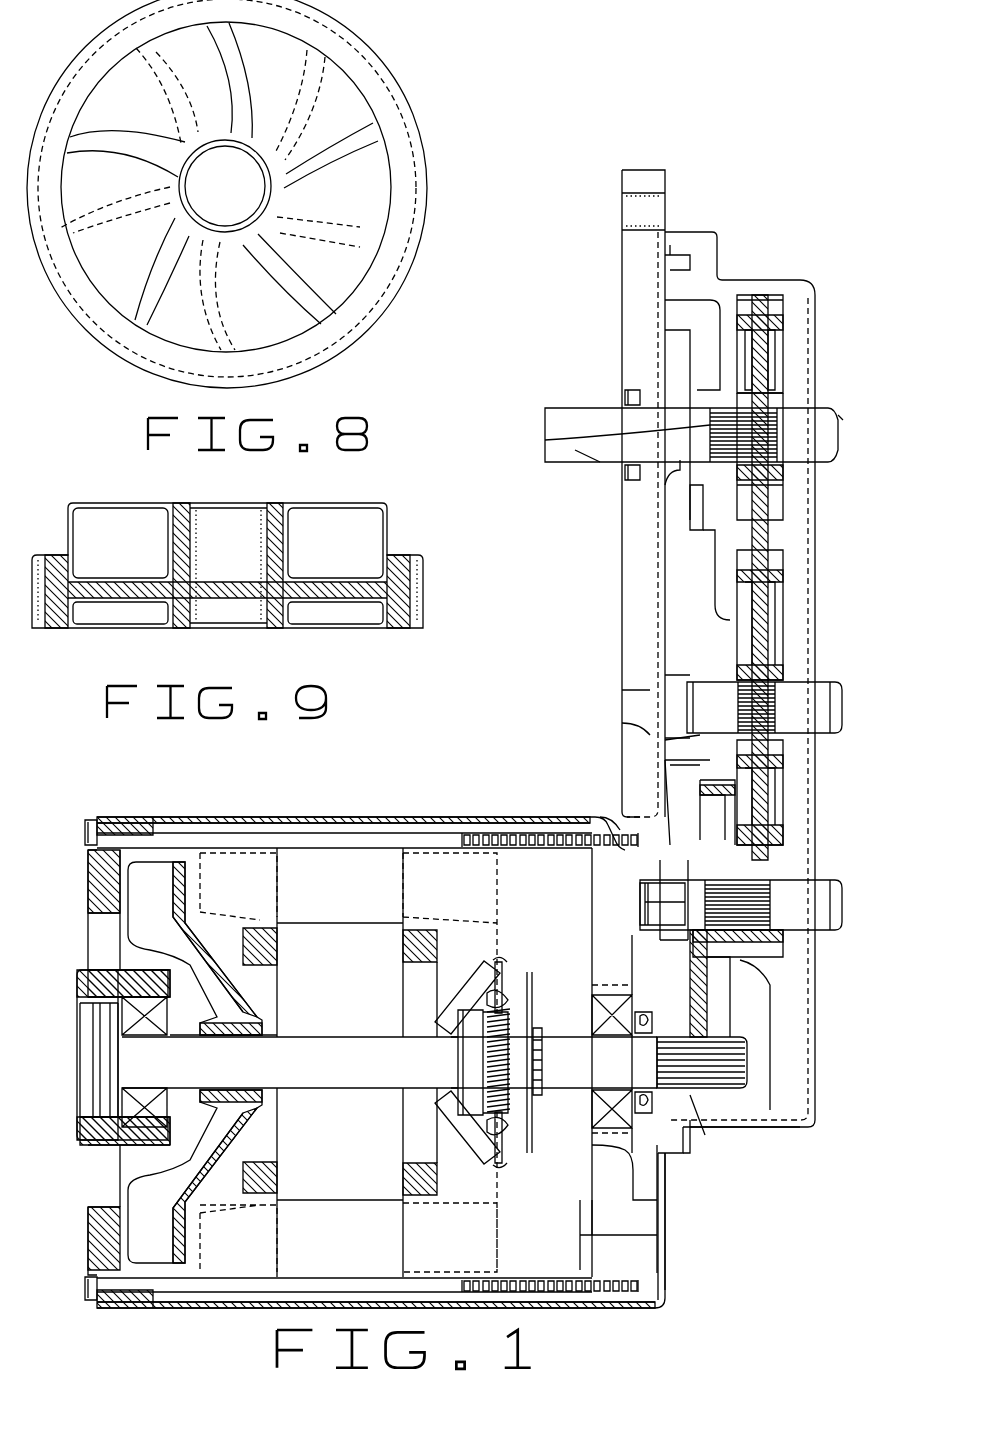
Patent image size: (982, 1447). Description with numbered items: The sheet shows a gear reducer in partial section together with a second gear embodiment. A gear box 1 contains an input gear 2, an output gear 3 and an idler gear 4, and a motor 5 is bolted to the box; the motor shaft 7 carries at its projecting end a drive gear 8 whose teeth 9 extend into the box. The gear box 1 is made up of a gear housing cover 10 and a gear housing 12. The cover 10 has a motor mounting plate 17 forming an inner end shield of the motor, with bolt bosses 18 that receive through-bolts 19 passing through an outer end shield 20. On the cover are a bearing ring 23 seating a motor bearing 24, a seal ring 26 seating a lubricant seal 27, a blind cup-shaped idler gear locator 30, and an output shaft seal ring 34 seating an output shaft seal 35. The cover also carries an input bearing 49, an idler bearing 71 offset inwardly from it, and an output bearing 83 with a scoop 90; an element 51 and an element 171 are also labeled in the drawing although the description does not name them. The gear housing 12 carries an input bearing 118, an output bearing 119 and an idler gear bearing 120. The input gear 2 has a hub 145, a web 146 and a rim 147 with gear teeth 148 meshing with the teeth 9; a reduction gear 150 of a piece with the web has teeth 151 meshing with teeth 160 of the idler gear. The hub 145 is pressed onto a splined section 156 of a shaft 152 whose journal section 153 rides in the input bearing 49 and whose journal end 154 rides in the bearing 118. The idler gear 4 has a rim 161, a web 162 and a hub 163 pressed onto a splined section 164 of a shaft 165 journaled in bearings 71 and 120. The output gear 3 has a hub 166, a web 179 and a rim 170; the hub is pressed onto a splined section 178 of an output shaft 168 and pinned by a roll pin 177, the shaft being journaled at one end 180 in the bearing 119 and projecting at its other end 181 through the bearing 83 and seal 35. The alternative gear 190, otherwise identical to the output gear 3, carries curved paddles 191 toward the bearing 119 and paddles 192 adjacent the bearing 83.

In FIG. 1, the gear box 1 is at (555, 643).
In FIG. 1, the input gear 2 is at (720, 1003).
In FIG. 1, the output gear 3 is at (783, 518).
In FIG. 1, the idler gear 4 is at (770, 648).
In FIG. 1, the motor 5 is at (444, 818).
In FIG. 1, the shaft 7 is at (755, 1062).
In FIG. 1, the drive gear 8 is at (700, 1085).
In FIG. 1, the teeth 9 is at (745, 1075).
In FIG. 1, the gear housing cover 10 is at (620, 527).
In FIG. 1, the gear housing 12 is at (822, 565).
In FIG. 1, the motor mounting plate 17 is at (665, 1230).
In FIG. 1, the bolt bosses 18 is at (612, 825).
In FIG. 1, the through-bolts 19 is at (360, 833).
In FIG. 1, the outer end shield 20 is at (80, 1245).
In FIG. 1, the bearing ring 23 is at (600, 1160).
In FIG. 1, the motor bearing 24 is at (592, 1110).
In FIG. 1, the seal ring 26 is at (645, 1013).
In FIG. 1, the lubricant seal 27 is at (690, 1102).
In FIG. 1, the idler gear locator 30 is at (625, 690).
In FIG. 1, the output shaft seal ring 34 is at (625, 398).
In FIG. 1, the output shaft seal 35 is at (625, 475).
In FIG. 1, the input bearing 49 is at (660, 935).
In FIG. 1, the snap ring 51 is at (640, 910).
In FIG. 1, the idler bearing 71 is at (700, 672).
In FIG. 1, the output bearing 83 is at (670, 500).
In FIG. 8, the scoop 90 is at (92, 338).
In FIG. 1, the input bearing 118 is at (810, 885).
In FIG. 1, the output bearing 119 is at (820, 385).
In FIG. 1, the idler gear bearing 120 is at (825, 680).
In FIG. 1, the hub 145 is at (775, 955).
In FIG. 1, the web 146 is at (700, 815).
In FIG. 1, the rim 147 is at (705, 790).
In FIG. 1, the gear teeth 148 is at (700, 740).
In FIG. 1, the reduction gear 150 is at (765, 975).
In FIG. 1, the gear teeth 151 is at (770, 1000).
In FIG. 1, the shaft 152 is at (790, 908).
In FIG. 1, the journal section 153 is at (668, 893).
In FIG. 1, the journal end 154 is at (818, 915).
In FIG. 1, the splined section 156 is at (780, 895).
In FIG. 1, the teeth 160 is at (775, 595).
In FIG. 1, the rim 161 is at (780, 615).
In FIG. 1, the web 162 is at (752, 610).
In FIG. 1, the hub 163 is at (742, 630).
In FIG. 1, the splined section 164 is at (660, 664).
In FIG. 1, the shaft 165 is at (810, 705).
In FIG. 1, the hub 166 is at (735, 362).
In FIG. 1, the shaft 168 is at (822, 420).
In FIG. 1, the rim 170 is at (775, 315).
In FIG. 1, the gear 171 is at (745, 300).
In FIG. 1, the roll pin 177 is at (700, 530).
In FIG. 1, the splined section 178 is at (660, 435).
In FIG. 1, the web 179 is at (755, 338).
In FIG. 1, the end 180 is at (825, 462).
In FIG. 1, the projecting output end 181 is at (605, 447).
In FIG. 9, the gear 190 is at (418, 632).
In FIG. 8, the paddles 191 is at (302, 312).
In FIG. 9, the paddles 191 is at (362, 630).
In FIG. 8, the paddles 192 is at (362, 256).
In FIG. 9, the paddles 192 is at (362, 503).